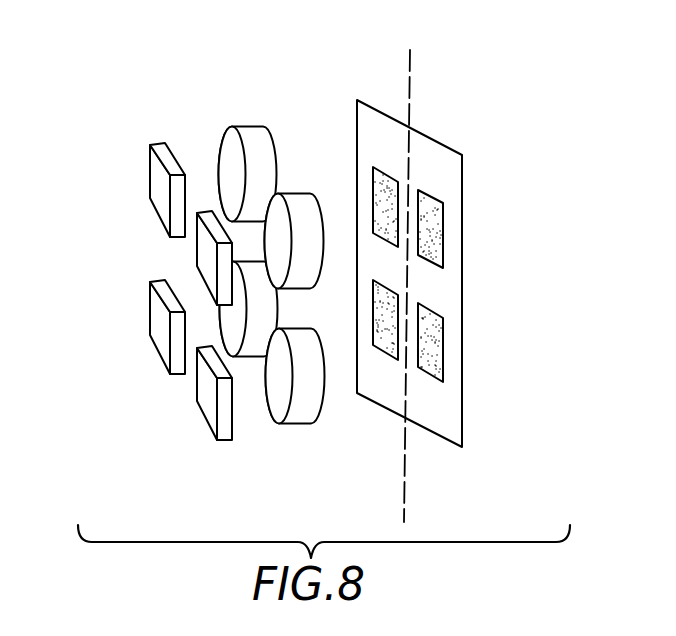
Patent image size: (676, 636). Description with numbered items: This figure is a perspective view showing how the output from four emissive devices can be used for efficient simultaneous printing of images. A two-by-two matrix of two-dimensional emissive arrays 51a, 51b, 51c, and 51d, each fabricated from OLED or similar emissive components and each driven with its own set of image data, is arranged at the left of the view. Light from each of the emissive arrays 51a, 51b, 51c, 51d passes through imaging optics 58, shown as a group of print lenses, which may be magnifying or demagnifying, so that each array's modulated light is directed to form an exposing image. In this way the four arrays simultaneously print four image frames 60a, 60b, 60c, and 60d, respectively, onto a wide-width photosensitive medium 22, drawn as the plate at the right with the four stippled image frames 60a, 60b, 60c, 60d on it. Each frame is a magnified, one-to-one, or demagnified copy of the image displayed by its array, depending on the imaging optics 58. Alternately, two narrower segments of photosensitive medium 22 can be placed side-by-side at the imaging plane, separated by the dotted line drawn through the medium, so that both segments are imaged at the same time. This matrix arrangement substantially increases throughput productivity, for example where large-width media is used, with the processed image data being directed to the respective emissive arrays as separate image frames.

The photosensitive medium 22 is at (373, 108).
The emissive array 51a is at (157, 192).
The emissive array 51b is at (200, 252).
The emissive array 51c is at (158, 333).
The emissive array 51d is at (205, 408).
The imaging optics 58 is at (293, 423).
The image frame 60a is at (373, 182).
The image frame 60b is at (440, 222).
The image frame 60c is at (385, 347).
The image frame 60d is at (438, 340).